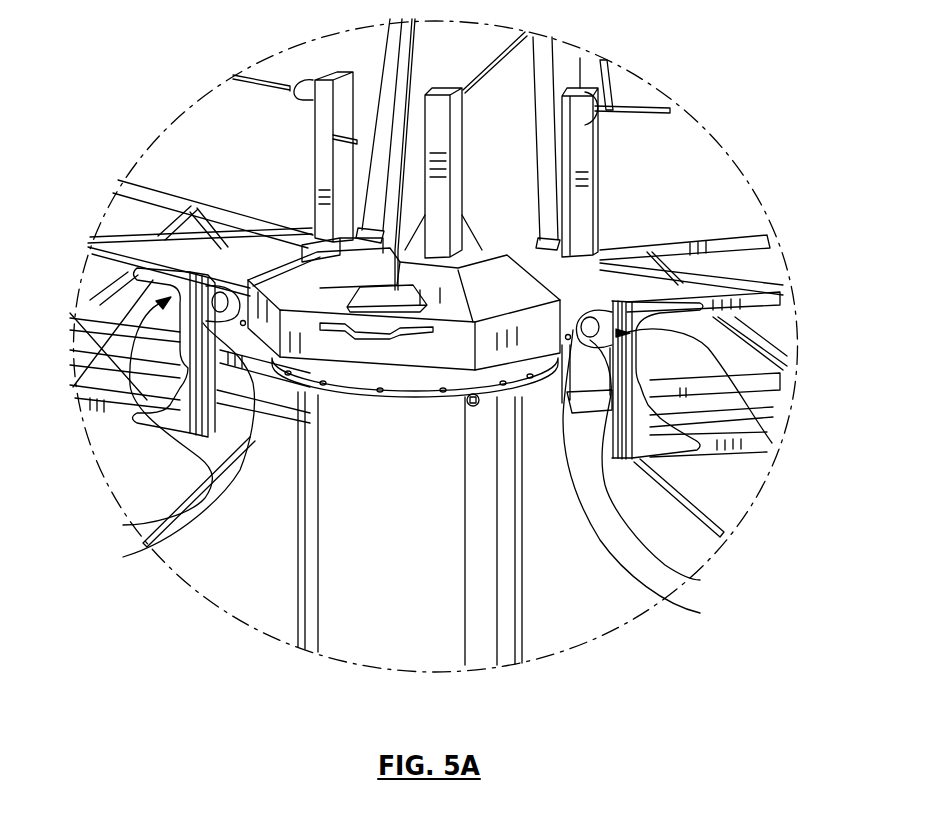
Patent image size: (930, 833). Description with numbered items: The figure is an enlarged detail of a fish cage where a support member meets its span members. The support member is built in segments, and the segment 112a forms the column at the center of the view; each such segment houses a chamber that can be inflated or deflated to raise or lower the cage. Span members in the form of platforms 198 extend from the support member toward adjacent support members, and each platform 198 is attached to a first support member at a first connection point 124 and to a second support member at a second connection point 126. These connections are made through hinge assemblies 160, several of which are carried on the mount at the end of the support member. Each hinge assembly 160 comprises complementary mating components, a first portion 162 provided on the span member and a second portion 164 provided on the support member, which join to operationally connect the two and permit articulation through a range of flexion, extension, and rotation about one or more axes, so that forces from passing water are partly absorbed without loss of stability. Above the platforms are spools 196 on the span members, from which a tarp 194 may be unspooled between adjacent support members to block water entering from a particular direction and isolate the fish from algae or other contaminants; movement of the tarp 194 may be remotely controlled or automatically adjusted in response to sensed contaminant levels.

The segment 112a is at (322, 527).
The tarp 194 is at (284, 62).
The spool 196 is at (313, 155).
The platform 198 is at (78, 250).
The first connection point 124 is at (772, 443).
The second connection point 126 is at (84, 424).
The hinge assembly 160 is at (421, 466).
The first portion of the hinge assembly 162 is at (85, 503).
The second portion of the hinge assembly 164 is at (124, 525).